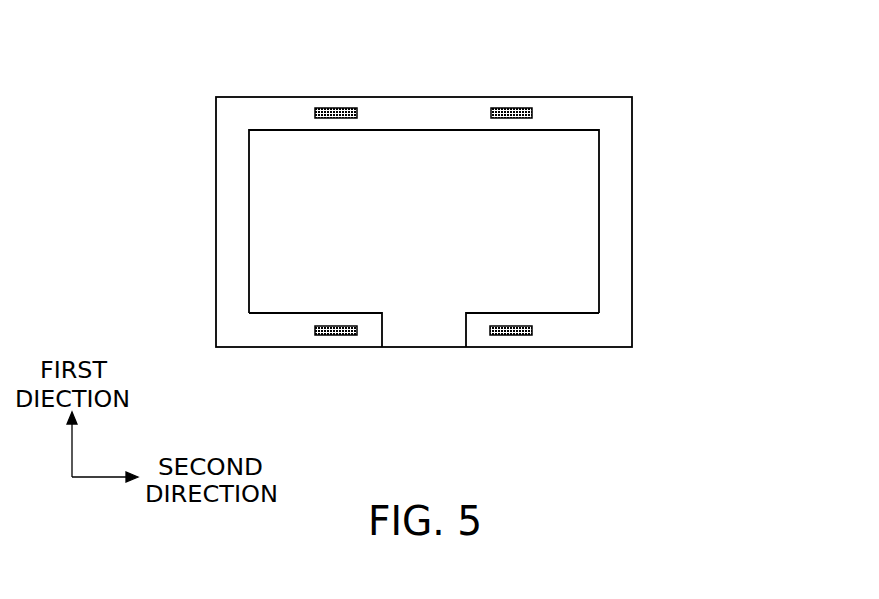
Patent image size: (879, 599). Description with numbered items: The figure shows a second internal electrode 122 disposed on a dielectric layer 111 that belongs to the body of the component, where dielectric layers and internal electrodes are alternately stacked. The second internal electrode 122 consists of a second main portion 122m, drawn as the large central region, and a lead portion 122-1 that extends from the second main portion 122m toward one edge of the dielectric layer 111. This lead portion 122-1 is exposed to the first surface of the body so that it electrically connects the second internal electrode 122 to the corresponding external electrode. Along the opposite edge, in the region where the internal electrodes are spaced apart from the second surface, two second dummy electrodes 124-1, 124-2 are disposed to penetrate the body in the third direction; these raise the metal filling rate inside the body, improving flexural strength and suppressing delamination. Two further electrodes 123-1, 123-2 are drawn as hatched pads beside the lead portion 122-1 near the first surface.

The dielectric layer 111 is at (622, 222).
The second internal electrode 122 is at (772, 60).
The second main portion 122m is at (424, 142).
The 2-1 lead portion 122-1 is at (425, 337).
The first electrode pad 123-1 is at (347, 337).
The second electrode pad 123-2 is at (510, 337).
The second dummy electrode 124-1 is at (345, 107).
The second dummy electrode 124-2 is at (510, 107).